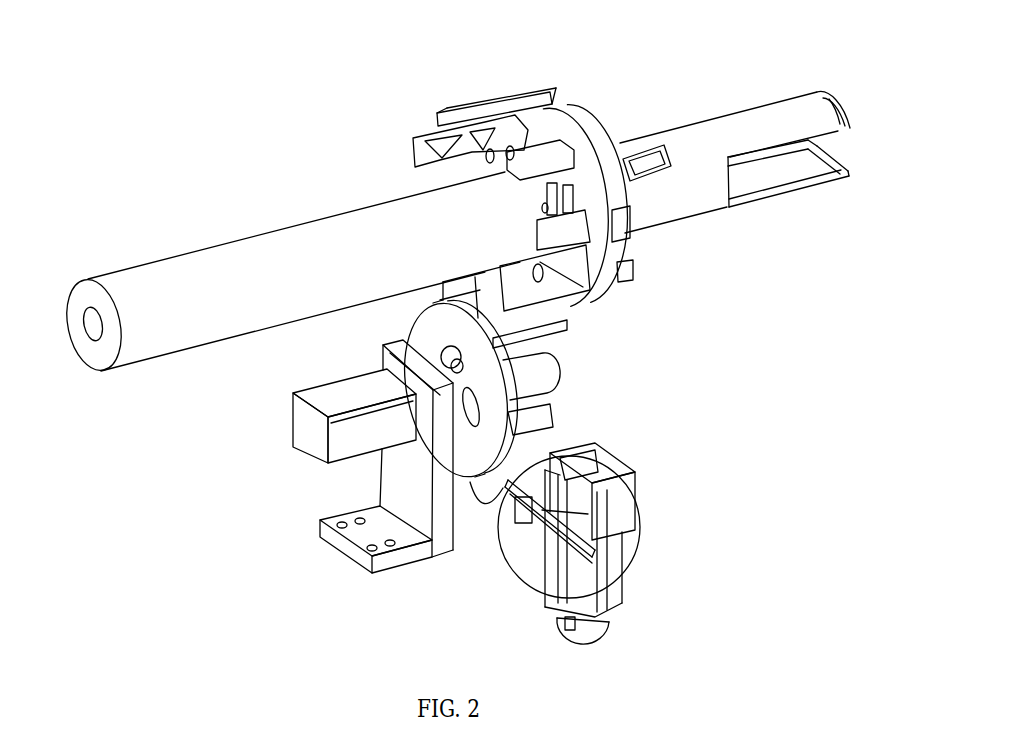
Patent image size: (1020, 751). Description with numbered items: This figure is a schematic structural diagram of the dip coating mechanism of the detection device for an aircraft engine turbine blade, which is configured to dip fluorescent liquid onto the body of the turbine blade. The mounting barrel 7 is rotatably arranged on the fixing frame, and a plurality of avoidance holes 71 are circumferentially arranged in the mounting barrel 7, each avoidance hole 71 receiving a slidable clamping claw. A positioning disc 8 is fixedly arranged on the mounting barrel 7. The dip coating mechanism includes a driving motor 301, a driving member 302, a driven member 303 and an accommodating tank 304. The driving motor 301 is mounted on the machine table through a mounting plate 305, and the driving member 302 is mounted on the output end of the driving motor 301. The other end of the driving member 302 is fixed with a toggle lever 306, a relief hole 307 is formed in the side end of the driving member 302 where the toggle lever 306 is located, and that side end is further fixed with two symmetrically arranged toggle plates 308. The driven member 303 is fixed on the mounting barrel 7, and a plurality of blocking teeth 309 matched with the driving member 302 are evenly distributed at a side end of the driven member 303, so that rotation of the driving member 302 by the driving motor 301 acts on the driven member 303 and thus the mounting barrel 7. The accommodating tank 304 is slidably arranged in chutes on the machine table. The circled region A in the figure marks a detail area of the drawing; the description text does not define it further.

The mounting barrel 7 is at (261, 263).
The avoidance hole 71 is at (661, 146).
The positioning disc 8 is at (603, 148).
The driving motor 301 is at (362, 425).
The driving member 302 is at (497, 466).
The driven member 303 is at (474, 163).
The accommodating tank 304 is at (568, 622).
The mounting plate 305 is at (407, 513).
The toggle lever 306 is at (530, 360).
The relief hole 307 is at (533, 427).
The toggle plate 308 is at (470, 513).
The blocking tooth 309 is at (500, 117).
The detail region A is at (613, 592).